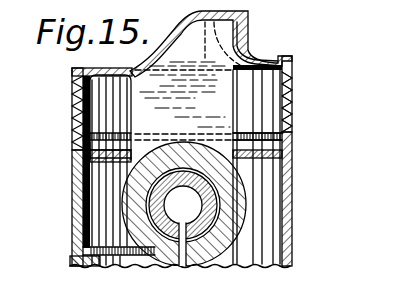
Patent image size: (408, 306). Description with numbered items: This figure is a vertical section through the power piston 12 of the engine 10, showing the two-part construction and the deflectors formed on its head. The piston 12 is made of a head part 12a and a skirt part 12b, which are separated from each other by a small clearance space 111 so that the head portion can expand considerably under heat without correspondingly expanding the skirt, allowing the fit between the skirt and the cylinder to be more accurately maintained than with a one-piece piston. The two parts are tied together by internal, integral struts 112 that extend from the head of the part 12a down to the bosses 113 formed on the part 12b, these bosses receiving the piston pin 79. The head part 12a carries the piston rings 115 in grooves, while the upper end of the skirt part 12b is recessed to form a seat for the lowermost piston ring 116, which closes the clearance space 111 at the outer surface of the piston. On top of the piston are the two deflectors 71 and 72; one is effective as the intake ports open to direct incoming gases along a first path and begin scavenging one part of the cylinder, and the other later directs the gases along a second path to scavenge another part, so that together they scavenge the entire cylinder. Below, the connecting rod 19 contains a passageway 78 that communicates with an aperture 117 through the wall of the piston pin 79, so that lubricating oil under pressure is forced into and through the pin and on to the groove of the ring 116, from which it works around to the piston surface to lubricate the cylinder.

The cylinder block 10 is at (345, 161).
The piston 12 is at (152, 163).
The head part of the piston 12a is at (72, 126).
The struts 112 is at (72, 149).
The skirt part of the piston 12b is at (72, 178).
The connecting rod 19 is at (72, 204).
The piston pin 79 is at (150, 207).
The deflector 72 is at (249, 22).
The deflector 71 is at (291, 61).
The piston rings 115 is at (292, 92).
The clearance space 111 is at (293, 126).
The lowermost piston ring 116 is at (291, 135).
The bosses 113 is at (283, 180).
The aperture 117 is at (262, 214).
The passageway 78 is at (205, 218).